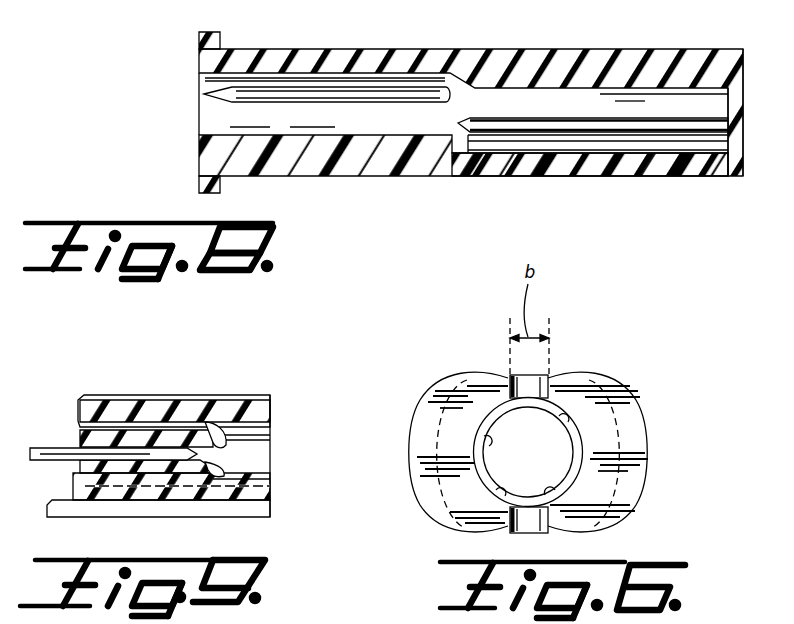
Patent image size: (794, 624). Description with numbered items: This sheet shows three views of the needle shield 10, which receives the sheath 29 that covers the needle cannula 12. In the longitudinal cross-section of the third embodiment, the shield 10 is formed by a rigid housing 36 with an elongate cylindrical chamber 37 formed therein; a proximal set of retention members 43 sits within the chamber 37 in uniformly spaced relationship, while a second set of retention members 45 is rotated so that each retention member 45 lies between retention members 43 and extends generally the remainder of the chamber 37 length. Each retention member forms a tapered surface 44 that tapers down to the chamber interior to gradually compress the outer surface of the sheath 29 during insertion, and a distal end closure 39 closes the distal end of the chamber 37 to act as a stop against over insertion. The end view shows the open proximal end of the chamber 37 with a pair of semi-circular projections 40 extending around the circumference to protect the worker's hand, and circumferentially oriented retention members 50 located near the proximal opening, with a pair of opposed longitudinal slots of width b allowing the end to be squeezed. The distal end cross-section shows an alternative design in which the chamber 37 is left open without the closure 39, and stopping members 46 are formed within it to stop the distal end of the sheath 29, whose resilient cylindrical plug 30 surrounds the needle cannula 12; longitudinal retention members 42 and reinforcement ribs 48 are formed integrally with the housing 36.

In FIG. 8, the needle shield 10 is at (471, 90).
In FIG. 9, the needle shield 10 is at (178, 411).
In FIG. 6, the needle shield 10 is at (393, 362).
In FIG. 9, the needle cannula 12 is at (97, 500).
In FIG. 9, the sheath 29 is at (132, 396).
In FIG. 9, the cylindrical plug 30 is at (180, 493).
In FIG. 9, the housing 36 is at (175, 369).
In FIG. 6, the housing 36 is at (490, 424).
In FIG. 8, the chamber 37 is at (391, 126).
In FIG. 8, the distal end closure 39 is at (742, 105).
In FIG. 8, the semi-circular projections 40 is at (217, 32).
In FIG. 6, the semi-circular projections 40 is at (645, 416).
In FIG. 9, the retention members 42 is at (262, 440).
In FIG. 8, the proximal set of retention members 43 is at (345, 78).
In FIG. 8, the tapered surface 44 is at (205, 95).
In FIG. 8, the second set of retention members 45 is at (585, 80).
In FIG. 9, the stopping members 46 is at (208, 422).
In FIG. 9, the reinforcement ribs 48 is at (243, 395).
In FIG. 6, the circumferentially oriented retention members 50 is at (573, 450).